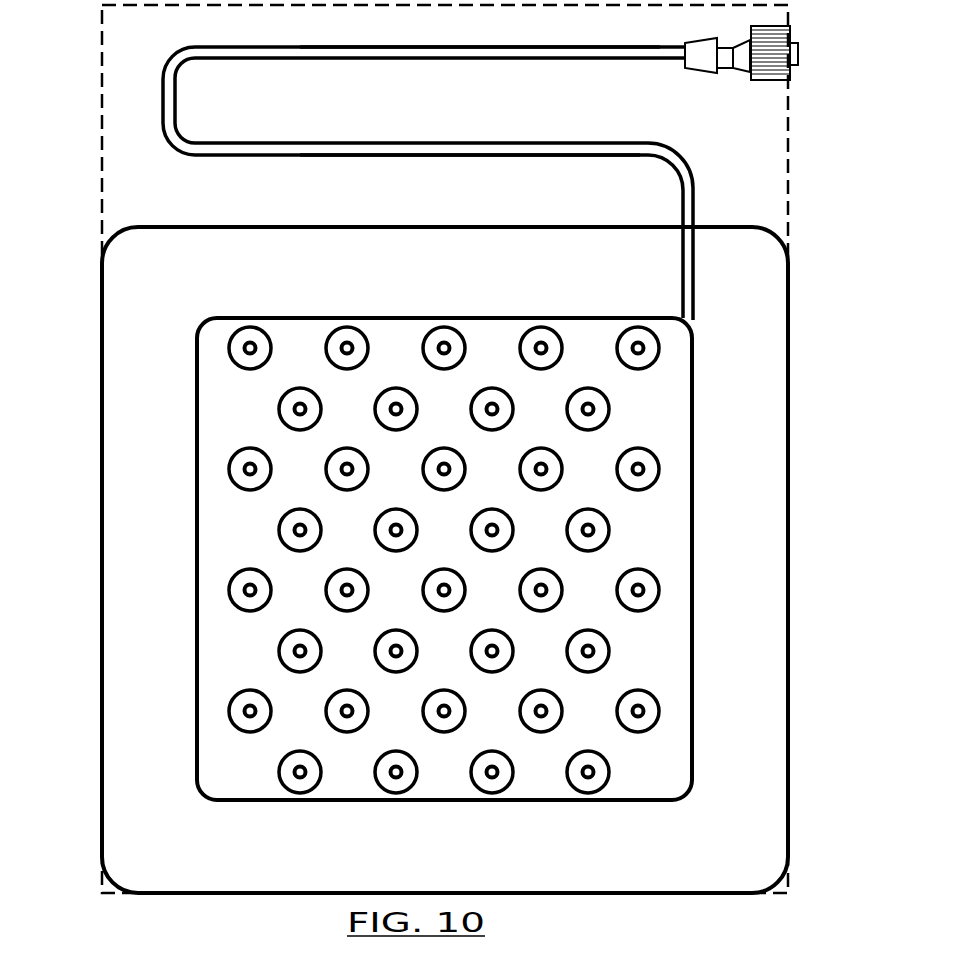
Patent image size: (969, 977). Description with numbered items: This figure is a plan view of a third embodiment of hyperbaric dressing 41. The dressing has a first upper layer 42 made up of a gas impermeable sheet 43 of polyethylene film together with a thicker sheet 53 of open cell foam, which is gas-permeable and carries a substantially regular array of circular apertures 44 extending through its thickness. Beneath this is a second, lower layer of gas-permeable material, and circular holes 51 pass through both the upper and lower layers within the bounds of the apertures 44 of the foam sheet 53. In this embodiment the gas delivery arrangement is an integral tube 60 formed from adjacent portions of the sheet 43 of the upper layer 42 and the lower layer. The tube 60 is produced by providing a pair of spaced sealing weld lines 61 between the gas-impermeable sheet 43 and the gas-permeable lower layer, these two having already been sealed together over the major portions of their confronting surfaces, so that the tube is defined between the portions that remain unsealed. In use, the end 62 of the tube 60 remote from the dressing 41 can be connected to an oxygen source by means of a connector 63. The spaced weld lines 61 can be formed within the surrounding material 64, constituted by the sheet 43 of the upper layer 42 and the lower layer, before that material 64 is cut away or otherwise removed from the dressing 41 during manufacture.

The hyperbaric dressing 41 is at (80, 495).
The first upper layer 42 is at (167, 763).
The gas impermeable sheet 43 is at (178, 866).
The circular apertures 44 is at (290, 410).
The circular holes 51 is at (600, 408).
The foam sheet 53 is at (672, 768).
The integral tube 60 is at (410, 143).
The sealing weld lines 61 is at (593, 53).
The end of tube 62 is at (672, 53).
The connector 63 is at (777, 60).
The material 64 is at (157, 164).